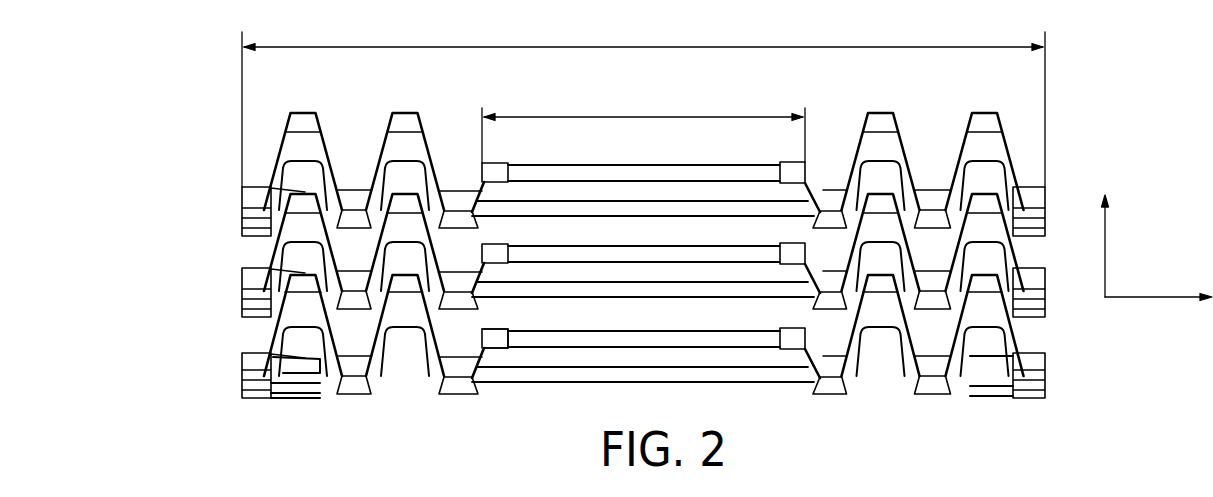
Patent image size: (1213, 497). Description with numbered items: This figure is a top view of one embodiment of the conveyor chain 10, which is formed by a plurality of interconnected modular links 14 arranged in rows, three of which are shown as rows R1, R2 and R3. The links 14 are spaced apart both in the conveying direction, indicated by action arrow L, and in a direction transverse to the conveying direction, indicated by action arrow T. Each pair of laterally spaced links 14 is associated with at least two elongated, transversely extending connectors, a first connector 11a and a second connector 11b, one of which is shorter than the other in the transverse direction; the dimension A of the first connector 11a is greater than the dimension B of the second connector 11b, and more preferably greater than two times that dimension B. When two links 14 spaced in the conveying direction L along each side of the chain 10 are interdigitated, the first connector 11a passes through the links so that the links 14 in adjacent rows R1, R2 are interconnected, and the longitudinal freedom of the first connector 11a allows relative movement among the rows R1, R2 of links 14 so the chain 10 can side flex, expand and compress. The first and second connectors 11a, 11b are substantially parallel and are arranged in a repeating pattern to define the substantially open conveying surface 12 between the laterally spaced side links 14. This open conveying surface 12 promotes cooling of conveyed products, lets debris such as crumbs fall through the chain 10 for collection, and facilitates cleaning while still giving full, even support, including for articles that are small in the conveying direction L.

The conveyor chain 10 is at (1077, 167).
The first connector 11a is at (635, 207).
The second connector 11b is at (558, 175).
The open conveying surface 12 is at (533, 313).
The modular link 14 is at (262, 496).
The first row of links R1 is at (233, 378).
The second row of links R2 is at (233, 290).
The third row of links R3 is at (233, 210).
The dimension of first connector A is at (643, 103).
The dimension of second connector B is at (643, 128).
The conveying direction L is at (1105, 248).
The transverse direction T is at (1130, 300).